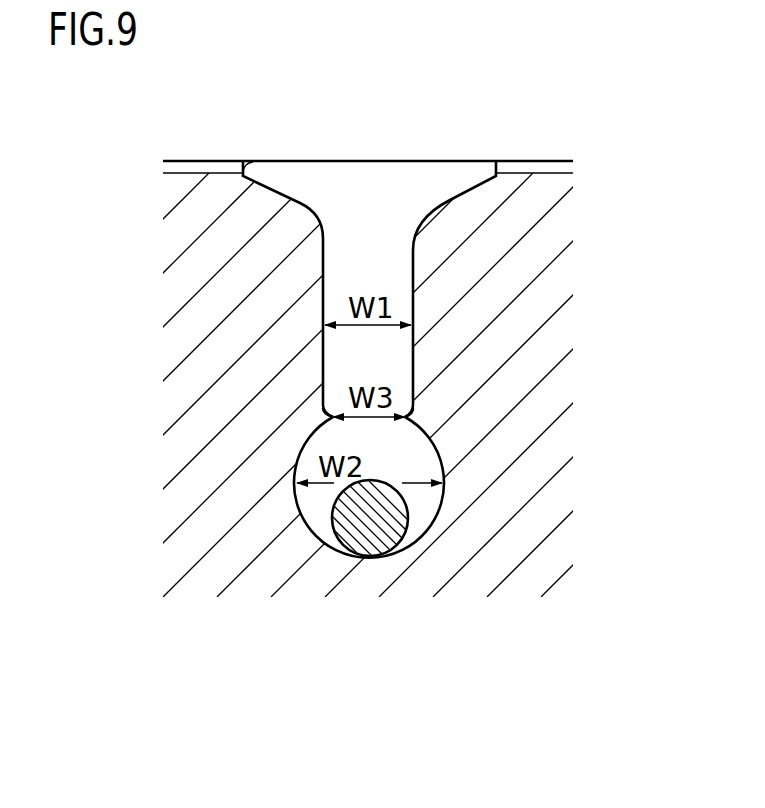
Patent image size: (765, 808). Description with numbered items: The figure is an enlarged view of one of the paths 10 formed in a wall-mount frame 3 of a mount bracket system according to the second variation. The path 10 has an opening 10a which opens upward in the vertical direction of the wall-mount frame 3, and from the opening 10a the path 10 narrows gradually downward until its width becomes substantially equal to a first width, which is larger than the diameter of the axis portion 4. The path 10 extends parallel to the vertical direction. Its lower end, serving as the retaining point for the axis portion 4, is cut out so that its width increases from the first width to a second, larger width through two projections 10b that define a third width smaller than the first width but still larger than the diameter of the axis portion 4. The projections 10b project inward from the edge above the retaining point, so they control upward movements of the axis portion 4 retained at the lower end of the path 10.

The wall-mount frame 3 is at (199, 160).
The path 10 is at (326, 280).
The opening 10a is at (254, 161).
The projections 10b is at (329, 418).
The axis portion 4 is at (395, 532).